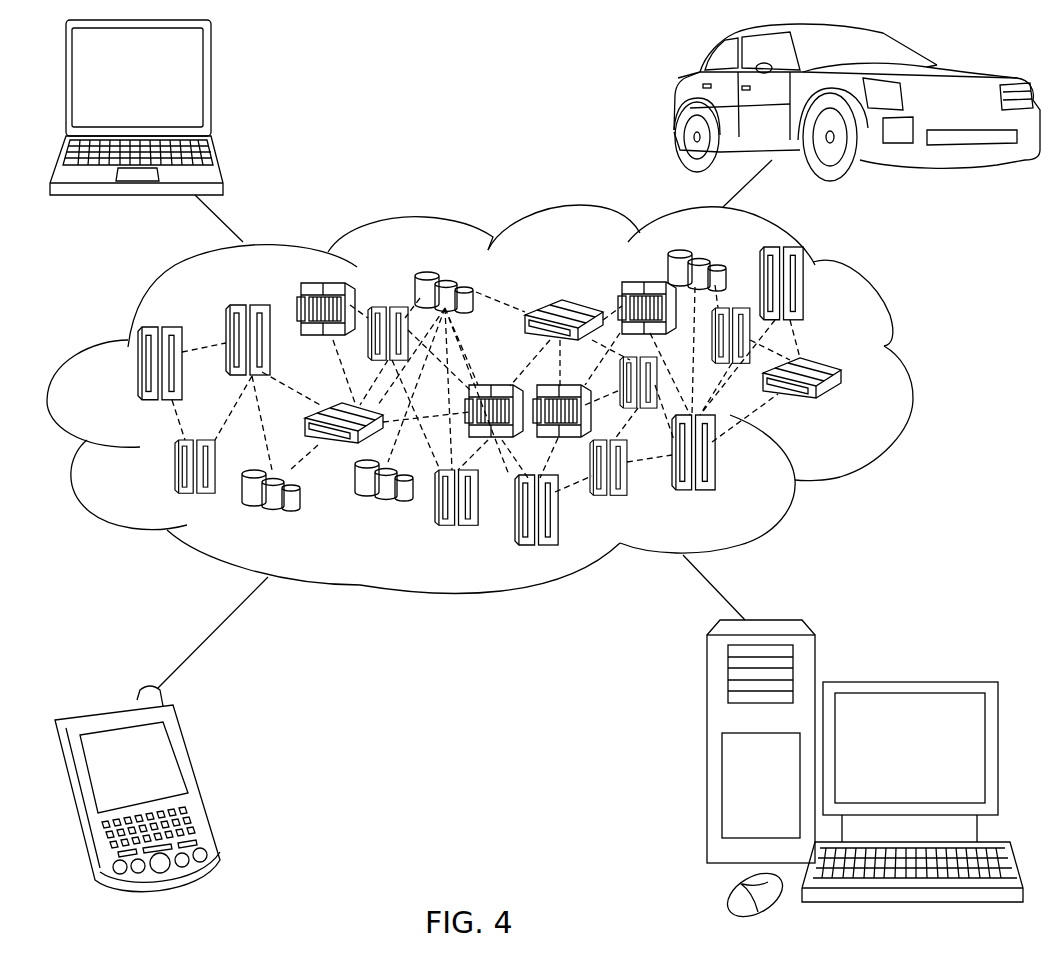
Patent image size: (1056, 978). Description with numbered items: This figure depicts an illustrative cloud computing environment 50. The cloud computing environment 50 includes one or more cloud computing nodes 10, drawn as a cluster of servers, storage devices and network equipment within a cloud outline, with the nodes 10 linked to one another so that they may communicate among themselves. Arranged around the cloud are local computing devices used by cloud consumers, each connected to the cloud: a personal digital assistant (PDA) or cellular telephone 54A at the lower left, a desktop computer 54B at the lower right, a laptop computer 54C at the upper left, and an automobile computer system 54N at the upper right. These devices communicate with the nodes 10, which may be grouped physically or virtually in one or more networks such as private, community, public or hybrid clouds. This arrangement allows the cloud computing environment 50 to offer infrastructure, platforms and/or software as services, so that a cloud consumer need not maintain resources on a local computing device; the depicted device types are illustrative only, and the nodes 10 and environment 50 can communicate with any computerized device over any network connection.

The cloud computing nodes 10 is at (847, 406).
The cloud computing environment 50 is at (907, 374).
The personal digital assistant (PDA) or cellular telephone 54A is at (201, 782).
The desktop computer 54B is at (905, 680).
The laptop computer 54C is at (212, 87).
The automobile computer system 54N is at (675, 100).